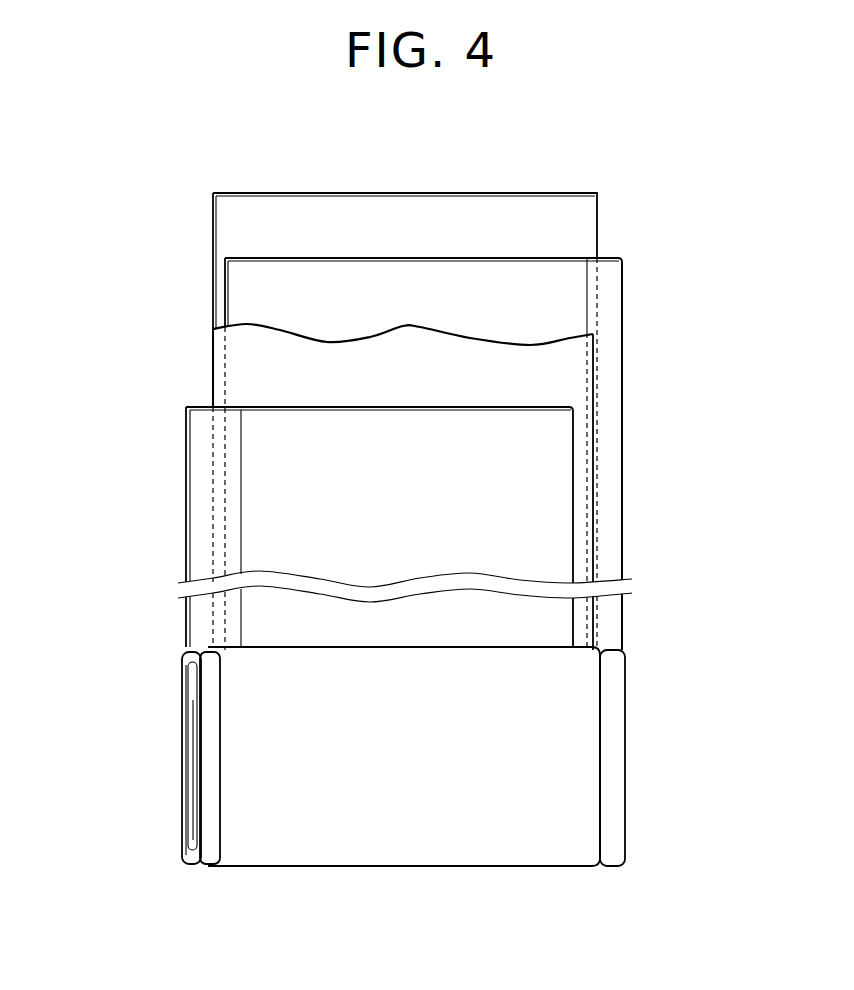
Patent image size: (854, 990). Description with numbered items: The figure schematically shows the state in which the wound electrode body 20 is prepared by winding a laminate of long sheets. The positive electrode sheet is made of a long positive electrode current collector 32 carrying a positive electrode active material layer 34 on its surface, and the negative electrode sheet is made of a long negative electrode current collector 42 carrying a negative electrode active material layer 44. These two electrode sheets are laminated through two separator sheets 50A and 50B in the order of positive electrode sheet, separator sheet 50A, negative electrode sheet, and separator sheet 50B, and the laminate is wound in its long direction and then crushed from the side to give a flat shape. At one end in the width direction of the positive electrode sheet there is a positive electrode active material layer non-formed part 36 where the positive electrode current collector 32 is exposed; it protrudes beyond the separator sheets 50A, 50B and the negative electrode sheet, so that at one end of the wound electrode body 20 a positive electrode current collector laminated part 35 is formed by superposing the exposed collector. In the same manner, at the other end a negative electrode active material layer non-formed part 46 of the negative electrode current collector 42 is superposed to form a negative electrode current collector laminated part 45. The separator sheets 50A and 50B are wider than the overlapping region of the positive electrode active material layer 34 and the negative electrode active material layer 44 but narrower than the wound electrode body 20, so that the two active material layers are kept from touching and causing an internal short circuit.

The wound electrode body 20 is at (308, 853).
The positive electrode current collector 32 is at (183, 432).
The positive electrode active material layer 34 is at (255, 545).
The positive electrode current collector laminated part 35 is at (193, 722).
The positive electrode active material layer non-formed part 36 is at (200, 507).
The negative electrode current collector 42 is at (623, 332).
The negative electrode active material layer 44 is at (580, 283).
The negative electrode current collector laminated part 45 is at (612, 733).
The negative electrode active material layer non-formed part 46 is at (603, 413).
The separator sheet 50A is at (248, 362).
The separator sheet 50B is at (237, 216).